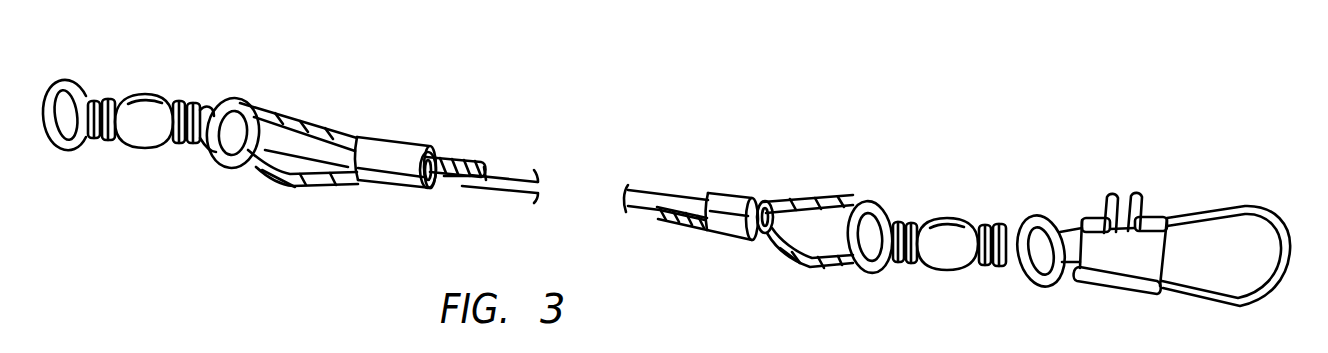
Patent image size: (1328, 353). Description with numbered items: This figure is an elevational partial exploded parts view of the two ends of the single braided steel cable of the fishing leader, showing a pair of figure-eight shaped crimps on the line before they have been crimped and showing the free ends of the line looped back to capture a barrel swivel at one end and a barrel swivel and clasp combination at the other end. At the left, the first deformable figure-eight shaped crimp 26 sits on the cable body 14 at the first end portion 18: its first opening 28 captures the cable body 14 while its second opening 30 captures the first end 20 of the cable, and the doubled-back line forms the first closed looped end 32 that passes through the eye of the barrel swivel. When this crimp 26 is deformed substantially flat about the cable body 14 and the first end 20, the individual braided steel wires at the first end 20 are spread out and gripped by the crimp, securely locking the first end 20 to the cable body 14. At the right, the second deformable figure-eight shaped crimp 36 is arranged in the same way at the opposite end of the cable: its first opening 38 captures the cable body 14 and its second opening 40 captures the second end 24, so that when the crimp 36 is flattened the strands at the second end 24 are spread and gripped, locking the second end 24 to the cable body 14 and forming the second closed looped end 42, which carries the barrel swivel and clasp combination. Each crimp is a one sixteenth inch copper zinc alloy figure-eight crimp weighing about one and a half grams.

The cable body 14 is at (492, 190).
The first end portion 18 is at (293, 93).
The first end 20 is at (474, 162).
The second end 24 is at (672, 220).
The first deformable figure-eight shaped crimp 26 is at (383, 138).
The first opening 28 is at (437, 178).
The second opening 30 is at (423, 154).
The first closed looped end 32 is at (297, 189).
The second deformable figure-eight shaped crimp 36 is at (733, 195).
The first opening 38 is at (777, 202).
The second opening 40 is at (760, 240).
The second closed looped end 42 is at (802, 267).